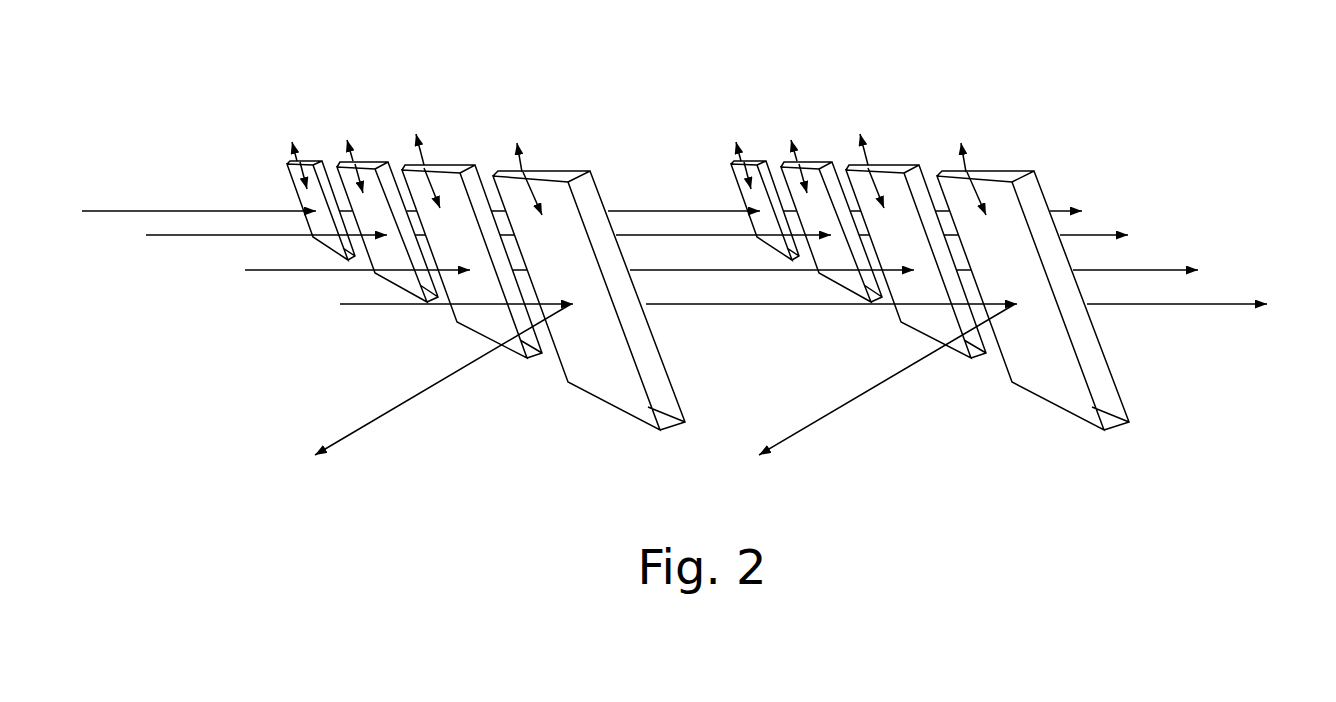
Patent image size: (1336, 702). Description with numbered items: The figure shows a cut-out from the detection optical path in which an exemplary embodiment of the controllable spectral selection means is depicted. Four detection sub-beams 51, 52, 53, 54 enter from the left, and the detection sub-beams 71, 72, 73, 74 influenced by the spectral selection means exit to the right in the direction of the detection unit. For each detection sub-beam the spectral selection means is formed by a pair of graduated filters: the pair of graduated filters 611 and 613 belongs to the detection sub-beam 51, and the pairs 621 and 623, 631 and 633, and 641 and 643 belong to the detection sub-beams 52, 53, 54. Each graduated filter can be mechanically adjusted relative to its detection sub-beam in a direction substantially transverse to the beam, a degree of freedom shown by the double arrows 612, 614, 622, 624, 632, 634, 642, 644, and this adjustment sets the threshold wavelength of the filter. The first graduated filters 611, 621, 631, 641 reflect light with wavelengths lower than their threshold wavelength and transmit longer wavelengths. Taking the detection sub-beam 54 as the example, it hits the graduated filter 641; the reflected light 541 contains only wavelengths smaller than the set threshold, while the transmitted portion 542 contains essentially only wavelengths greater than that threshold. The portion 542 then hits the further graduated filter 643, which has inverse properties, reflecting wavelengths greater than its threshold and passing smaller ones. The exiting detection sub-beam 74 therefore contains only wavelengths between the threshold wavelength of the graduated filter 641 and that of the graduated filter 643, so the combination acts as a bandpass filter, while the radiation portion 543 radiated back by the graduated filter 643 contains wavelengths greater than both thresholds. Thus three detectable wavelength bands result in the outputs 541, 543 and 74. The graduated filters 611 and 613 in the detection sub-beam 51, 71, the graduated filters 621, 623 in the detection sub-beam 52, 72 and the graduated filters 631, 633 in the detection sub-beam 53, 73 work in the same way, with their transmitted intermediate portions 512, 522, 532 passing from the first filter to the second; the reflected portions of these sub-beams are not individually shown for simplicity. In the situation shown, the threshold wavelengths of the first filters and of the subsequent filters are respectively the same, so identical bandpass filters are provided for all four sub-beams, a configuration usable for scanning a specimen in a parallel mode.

The detection sub-beam 51 is at (172, 210).
The detection sub-beam 52 is at (207, 237).
The detection sub-beam 53 is at (282, 272).
The detection sub-beam 54 is at (373, 306).
The first light beam after first splitter stage 512 is at (638, 210).
The second light beam after second splitter stage 522 is at (647, 236).
The third light beam after third splitter stage 532 is at (727, 270).
The transmitted portion of the detection sub-beam 542 is at (817, 305).
The reflected light 541 is at (377, 423).
The radiation portion radiated back 543 is at (821, 423).
The graduated filter 611 is at (297, 198).
The double arrow 612 is at (283, 153).
The graduated filter 613 is at (741, 198).
The double arrow 614 is at (727, 153).
The graduated filter 621 is at (368, 167).
The double arrow 622 is at (337, 153).
The graduated filter 623 is at (812, 167).
The double arrow 624 is at (781, 153).
The graduated filter 631 is at (477, 315).
The double arrow 632 is at (427, 155).
The graduated filter 633 is at (890, 180).
The double arrow 634 is at (871, 155).
The graduated filter 641 is at (608, 385).
The double arrow 642 is at (525, 163).
The graduated filter 643 is at (1052, 385).
The double arrow 644 is at (969, 163).
The detection sub-beam 71 is at (1063, 210).
The detection sub-beam 72 is at (1108, 235).
The detection sub-beam 73 is at (1175, 270).
The detection sub-beam 74 is at (1240, 304).